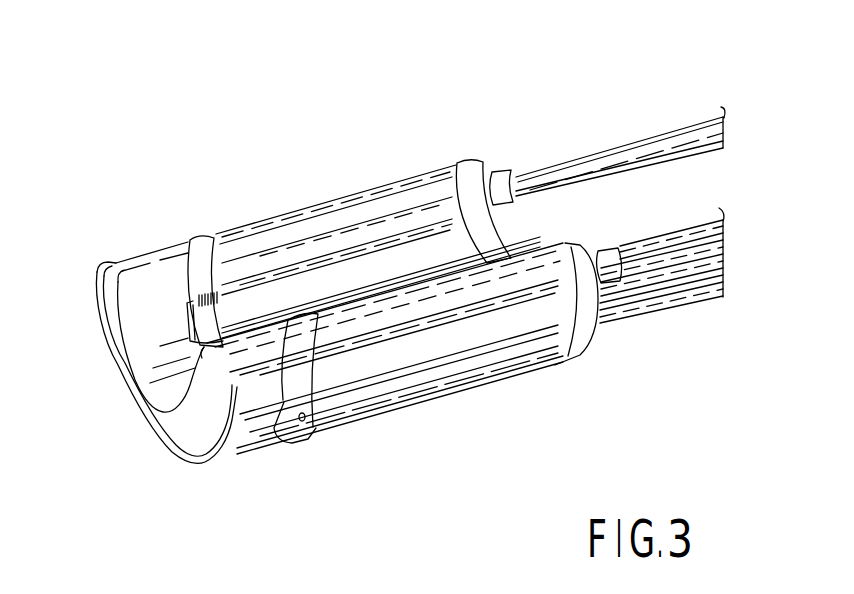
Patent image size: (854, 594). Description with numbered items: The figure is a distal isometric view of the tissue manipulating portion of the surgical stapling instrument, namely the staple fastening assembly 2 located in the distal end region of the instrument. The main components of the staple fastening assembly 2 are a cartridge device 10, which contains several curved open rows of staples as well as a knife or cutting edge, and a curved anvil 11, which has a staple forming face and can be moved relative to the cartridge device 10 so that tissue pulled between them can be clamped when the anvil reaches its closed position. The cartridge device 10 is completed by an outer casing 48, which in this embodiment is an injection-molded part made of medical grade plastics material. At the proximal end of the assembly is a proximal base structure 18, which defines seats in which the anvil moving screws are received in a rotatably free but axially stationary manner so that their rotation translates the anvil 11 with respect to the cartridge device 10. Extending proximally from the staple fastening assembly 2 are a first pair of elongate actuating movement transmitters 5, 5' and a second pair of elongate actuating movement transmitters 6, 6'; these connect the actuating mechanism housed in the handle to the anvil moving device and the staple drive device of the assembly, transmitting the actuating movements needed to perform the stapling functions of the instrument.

The staple fastening assembly 2 is at (294, 150).
The outer casing 48 is at (240, 237).
The proximal base structure 18 is at (459, 162).
The curved anvil 11 is at (148, 391).
The cartridge device 10 is at (370, 398).
The elongate actuating movement transmitter 5 is at (607, 133).
The elongate actuating movement transmitter 5' is at (669, 226).
The elongate actuating movement transmitter 6 is at (684, 271).
The elongate actuating movement transmitter 6' is at (673, 322).